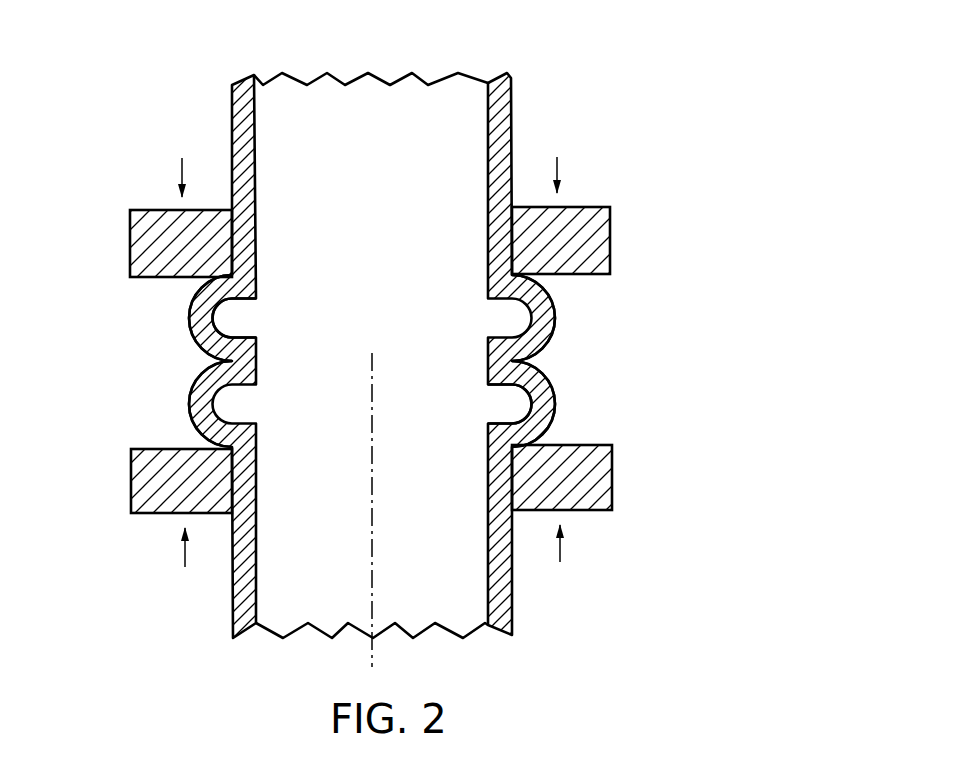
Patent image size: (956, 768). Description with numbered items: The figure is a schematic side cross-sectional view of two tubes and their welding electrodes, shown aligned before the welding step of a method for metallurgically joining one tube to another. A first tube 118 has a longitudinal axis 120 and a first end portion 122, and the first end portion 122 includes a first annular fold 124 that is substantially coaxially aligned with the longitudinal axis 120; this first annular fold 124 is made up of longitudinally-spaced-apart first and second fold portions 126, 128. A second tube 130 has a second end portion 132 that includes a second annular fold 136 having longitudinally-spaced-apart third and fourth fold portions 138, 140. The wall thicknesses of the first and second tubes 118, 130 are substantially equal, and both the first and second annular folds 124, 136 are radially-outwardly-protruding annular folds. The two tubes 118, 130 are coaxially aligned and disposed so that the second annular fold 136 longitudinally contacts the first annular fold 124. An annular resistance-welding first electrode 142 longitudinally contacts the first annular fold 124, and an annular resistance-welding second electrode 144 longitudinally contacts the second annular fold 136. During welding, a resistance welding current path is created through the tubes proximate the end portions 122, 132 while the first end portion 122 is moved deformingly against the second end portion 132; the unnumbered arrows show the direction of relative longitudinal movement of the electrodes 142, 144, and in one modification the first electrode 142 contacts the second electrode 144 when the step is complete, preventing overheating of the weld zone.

The first tube 118 is at (532, 600).
The longitudinal axis 120 is at (373, 503).
The first end portion 122 is at (185, 402).
The first annular fold 124 is at (556, 388).
The first fold portion 126 is at (494, 387).
The second fold portion 128 is at (500, 419).
The second tube 130 is at (216, 121).
The second end portion 132 is at (558, 317).
The second annular fold 136 is at (188, 318).
The third fold portion 138 is at (246, 331).
The fourth fold portion 140 is at (248, 309).
The first electrode 142 is at (603, 470).
The second electrode 144 is at (128, 233).